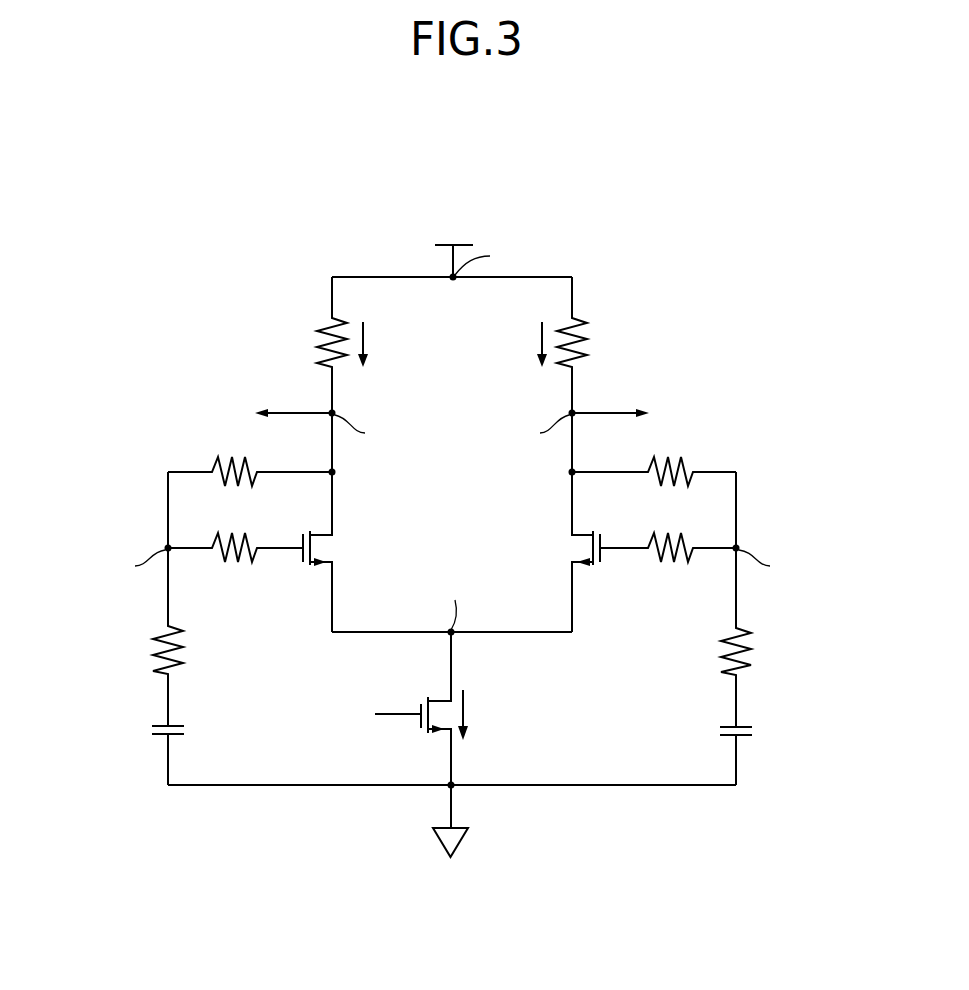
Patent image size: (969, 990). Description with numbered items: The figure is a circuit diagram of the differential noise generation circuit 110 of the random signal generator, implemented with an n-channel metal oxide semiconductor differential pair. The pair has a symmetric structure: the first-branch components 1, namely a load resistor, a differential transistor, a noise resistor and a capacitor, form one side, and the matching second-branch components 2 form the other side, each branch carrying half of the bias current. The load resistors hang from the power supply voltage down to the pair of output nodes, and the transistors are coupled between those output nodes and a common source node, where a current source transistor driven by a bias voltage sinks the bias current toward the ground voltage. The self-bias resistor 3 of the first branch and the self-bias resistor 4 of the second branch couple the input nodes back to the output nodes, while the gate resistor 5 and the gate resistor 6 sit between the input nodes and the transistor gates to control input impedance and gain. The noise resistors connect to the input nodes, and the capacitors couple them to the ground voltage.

The differential noise generation circuit 110 is at (475, 144).
The first-side components RN1, MN1, RS1, CS1 (resistor RN1, transistor MN1, resistor 1 is at (262, 531).
The second-side components RN2, MN2, RS2, CS2 and IBS/2 current 2 is at (372, 346).
The resistor RN3 and bias transistor MN3 3 is at (309, 621).
The resistor RN4 4 is at (654, 486).
The resistor RN5 5 is at (235, 561).
The resistor RN6 6 is at (668, 562).